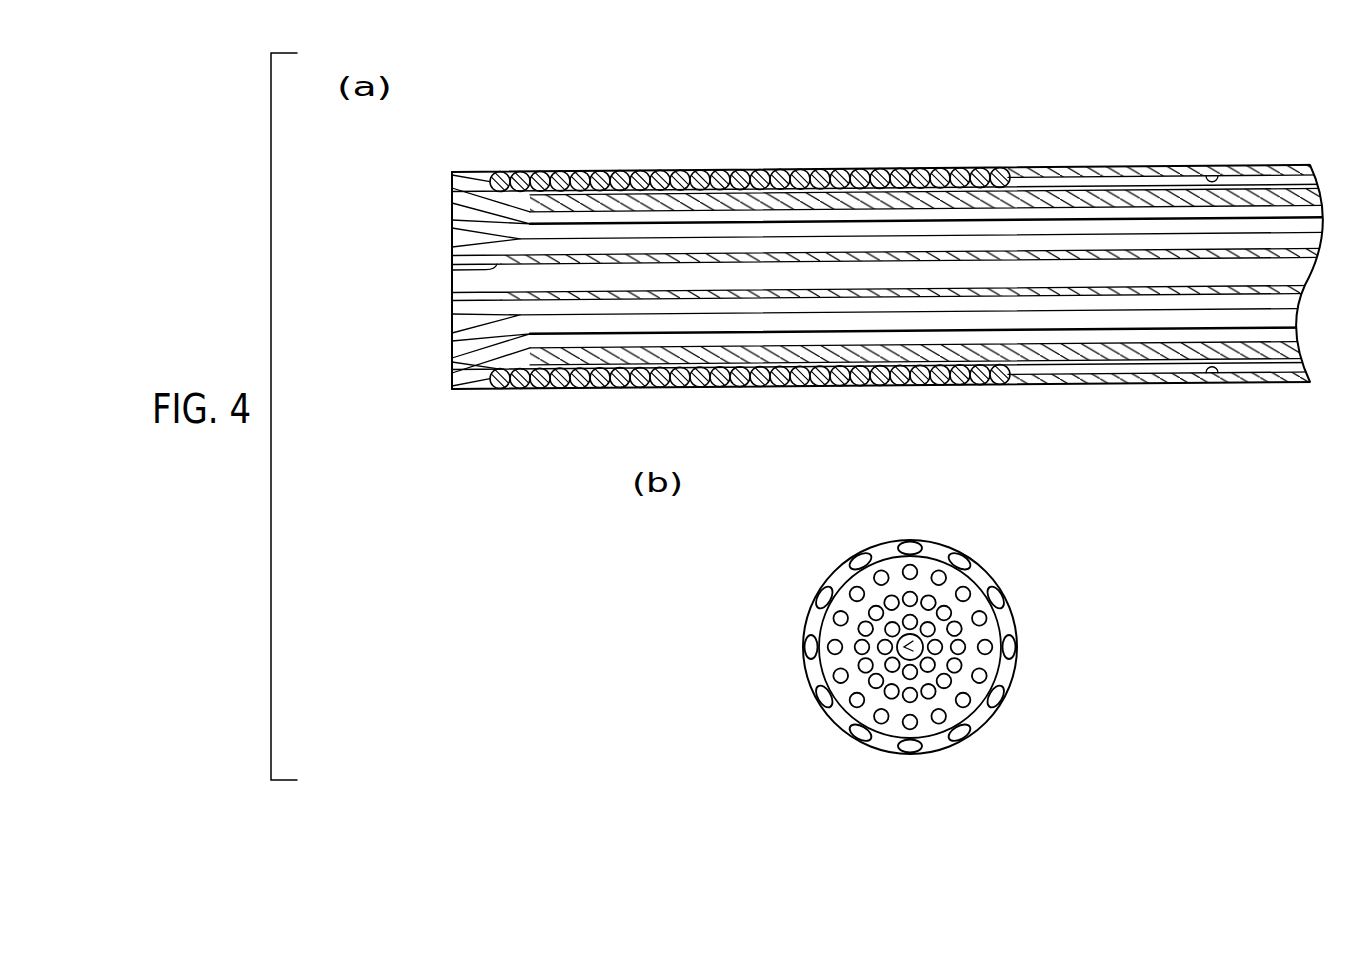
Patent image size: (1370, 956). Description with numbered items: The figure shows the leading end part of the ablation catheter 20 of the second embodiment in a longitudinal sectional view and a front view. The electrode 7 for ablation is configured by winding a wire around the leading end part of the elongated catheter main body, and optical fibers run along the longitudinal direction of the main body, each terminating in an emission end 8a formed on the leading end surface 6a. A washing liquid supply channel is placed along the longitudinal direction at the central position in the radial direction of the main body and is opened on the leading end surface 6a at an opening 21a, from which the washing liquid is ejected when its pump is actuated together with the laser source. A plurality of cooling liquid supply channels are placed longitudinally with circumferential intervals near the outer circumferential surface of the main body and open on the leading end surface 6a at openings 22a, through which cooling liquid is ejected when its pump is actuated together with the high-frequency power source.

The ablation catheter 20 is at (907, 121).
The leading end surface 6a is at (452, 372).
The electrode 7 is at (795, 172).
The emission end 8a is at (452, 223).
The opening 21a is at (452, 272).
The openings 22a is at (453, 172).